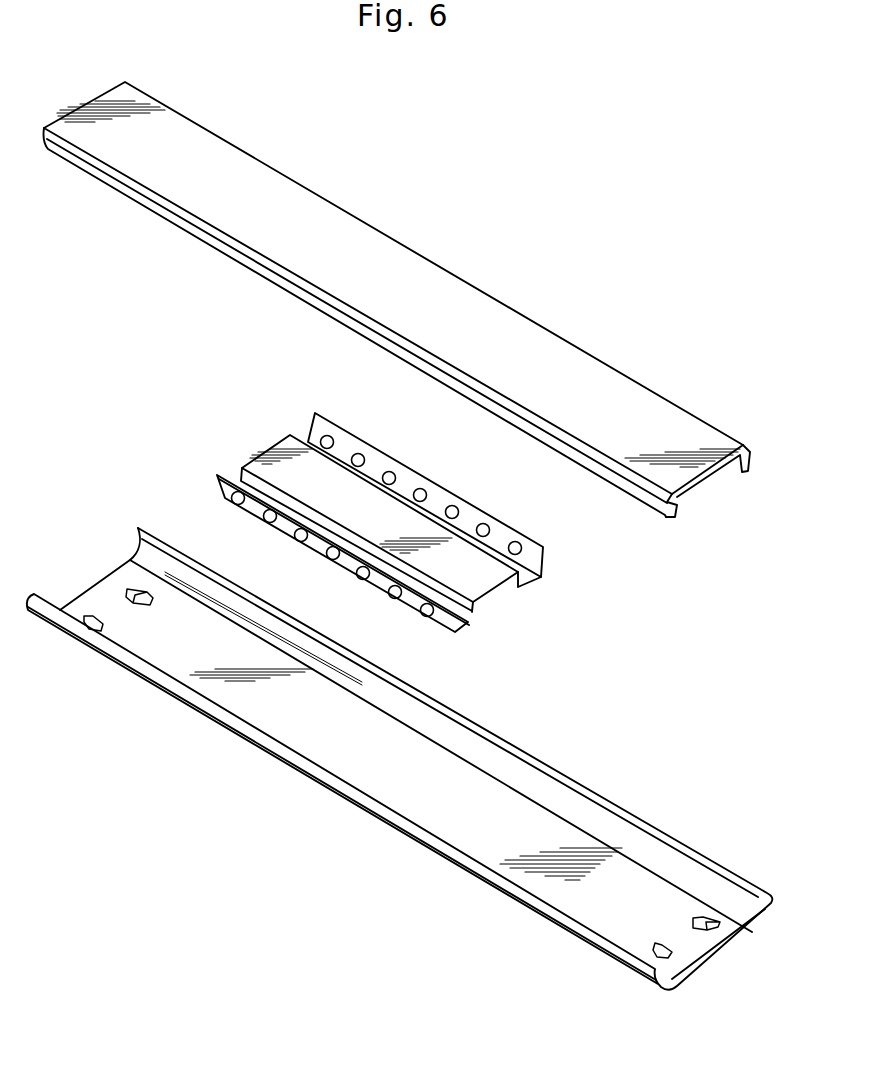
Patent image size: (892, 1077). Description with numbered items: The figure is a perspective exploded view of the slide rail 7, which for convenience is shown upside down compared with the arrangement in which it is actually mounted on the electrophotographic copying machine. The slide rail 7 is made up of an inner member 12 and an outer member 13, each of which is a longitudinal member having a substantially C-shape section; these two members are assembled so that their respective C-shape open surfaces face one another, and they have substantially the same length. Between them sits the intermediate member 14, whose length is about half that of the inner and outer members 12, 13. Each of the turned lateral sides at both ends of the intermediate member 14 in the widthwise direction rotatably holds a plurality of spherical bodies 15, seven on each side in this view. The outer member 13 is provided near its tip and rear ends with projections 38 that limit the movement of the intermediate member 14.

The slide rail 7 is at (723, 714).
The inner member 12 is at (540, 321).
The outer member 13 is at (470, 875).
The intermediate member 14 is at (458, 495).
The spherical bodies 15 is at (358, 453).
The projections 38 is at (92, 624).